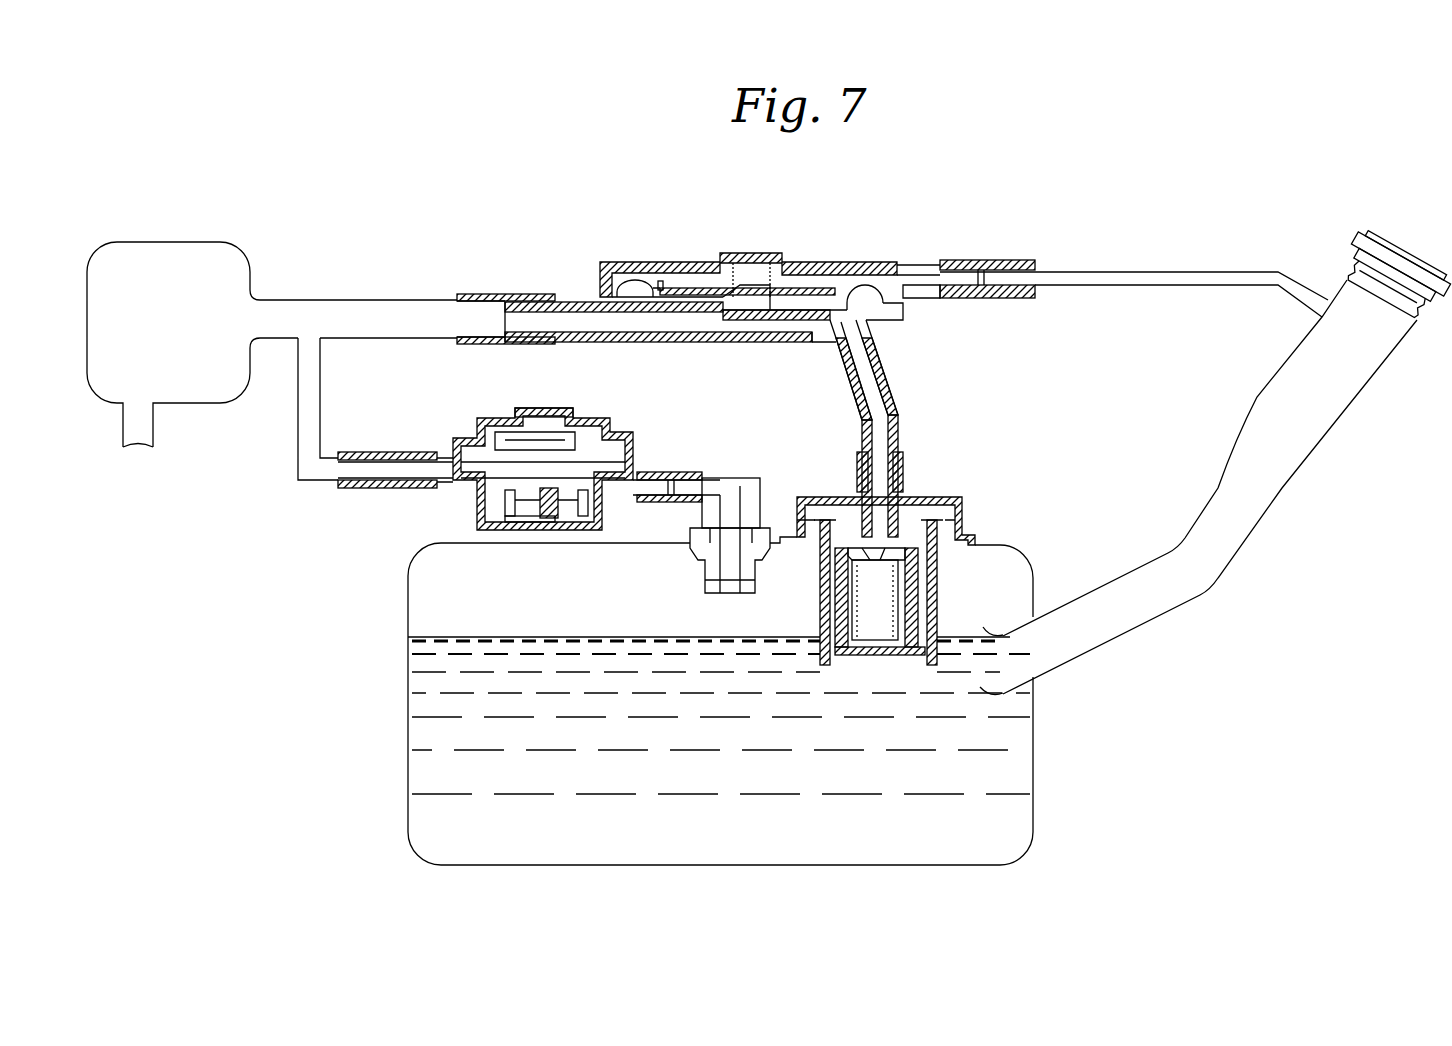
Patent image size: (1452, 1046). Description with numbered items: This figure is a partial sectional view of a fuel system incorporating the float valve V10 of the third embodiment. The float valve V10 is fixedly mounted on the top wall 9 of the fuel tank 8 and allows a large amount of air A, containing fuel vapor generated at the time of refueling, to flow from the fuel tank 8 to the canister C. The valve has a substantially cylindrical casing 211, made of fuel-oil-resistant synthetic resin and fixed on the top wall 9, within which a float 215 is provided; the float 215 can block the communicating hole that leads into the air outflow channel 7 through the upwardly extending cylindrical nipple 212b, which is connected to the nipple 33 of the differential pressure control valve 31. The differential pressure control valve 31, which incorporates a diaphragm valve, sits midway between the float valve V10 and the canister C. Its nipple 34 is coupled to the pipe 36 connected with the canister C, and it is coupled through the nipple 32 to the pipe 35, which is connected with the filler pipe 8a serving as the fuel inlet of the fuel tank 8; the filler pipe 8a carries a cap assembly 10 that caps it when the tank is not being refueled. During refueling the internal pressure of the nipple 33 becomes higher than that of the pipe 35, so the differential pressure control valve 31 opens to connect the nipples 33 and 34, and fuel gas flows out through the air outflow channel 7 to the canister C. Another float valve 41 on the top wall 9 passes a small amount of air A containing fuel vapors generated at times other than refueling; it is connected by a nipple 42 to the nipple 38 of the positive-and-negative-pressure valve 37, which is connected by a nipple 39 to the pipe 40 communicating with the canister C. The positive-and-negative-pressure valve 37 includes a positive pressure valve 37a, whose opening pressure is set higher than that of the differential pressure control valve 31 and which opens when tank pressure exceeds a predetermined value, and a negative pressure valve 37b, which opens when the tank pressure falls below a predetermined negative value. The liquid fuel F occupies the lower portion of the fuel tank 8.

The canister C is at (177, 264).
The air A is at (287, 321).
The pipe 36 is at (396, 299).
The nipple 34 is at (572, 302).
The differential pressure control valve 31 is at (800, 248).
The nipple 32 is at (918, 262).
The pipe 35 is at (1153, 271).
The cap assembly 10 is at (1393, 255).
The filler pipe 8a is at (1342, 443).
The nipple 33 is at (893, 371).
The air outflow channel 7 is at (880, 425).
The upwardly extending cylindrical nipple 212b is at (905, 478).
The pipe 40 is at (298, 481).
The nipple 39 is at (445, 456).
The positive-and-negative-pressure valve 37 is at (623, 404).
The positive pressure valve 37a is at (516, 417).
The negative pressure valve 37b is at (510, 530).
The nipple 38 is at (637, 472).
The float valve 41 is at (772, 480).
The nipple 42 is at (734, 478).
The fuel tank 8 is at (1035, 781).
The top wall 9 is at (990, 544).
The casing 211 is at (946, 585).
The float 215 is at (838, 616).
The fuel F is at (408, 706).
The float valve V10 is at (875, 692).